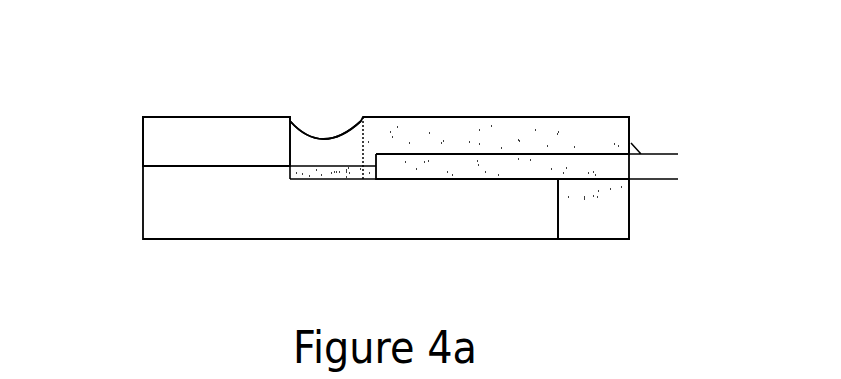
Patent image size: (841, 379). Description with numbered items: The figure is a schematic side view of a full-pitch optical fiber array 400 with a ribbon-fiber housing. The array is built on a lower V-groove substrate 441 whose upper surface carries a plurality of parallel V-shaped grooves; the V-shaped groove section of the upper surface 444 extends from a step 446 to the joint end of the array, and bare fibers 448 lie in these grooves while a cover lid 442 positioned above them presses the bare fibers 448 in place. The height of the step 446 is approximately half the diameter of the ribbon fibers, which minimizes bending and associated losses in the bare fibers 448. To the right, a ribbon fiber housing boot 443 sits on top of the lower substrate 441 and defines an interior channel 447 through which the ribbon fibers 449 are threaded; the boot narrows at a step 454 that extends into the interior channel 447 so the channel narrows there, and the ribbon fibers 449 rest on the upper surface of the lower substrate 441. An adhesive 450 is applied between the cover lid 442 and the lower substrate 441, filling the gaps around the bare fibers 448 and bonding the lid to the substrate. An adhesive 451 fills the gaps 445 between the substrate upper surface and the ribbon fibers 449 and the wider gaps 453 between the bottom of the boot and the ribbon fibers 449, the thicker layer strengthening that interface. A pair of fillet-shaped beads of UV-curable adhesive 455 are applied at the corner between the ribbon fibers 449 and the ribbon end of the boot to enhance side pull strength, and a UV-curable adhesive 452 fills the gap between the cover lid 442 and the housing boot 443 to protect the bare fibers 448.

The optical fiber array 400 is at (106, 229).
The lower V-groove substrate 441 is at (218, 203).
The cover lid 442 is at (192, 130).
The ribbon fiber housing boot 443 is at (522, 131).
The V-shaped groove section of the upper surface 444 is at (241, 166).
The gaps 445 is at (402, 180).
The step 446 is at (292, 181).
The interior channel 447 is at (605, 143).
The bare fibers 448 is at (340, 163).
The ribbon fibers 449 is at (678, 167).
The adhesive 450 is at (130, 165).
The adhesive 451 is at (449, 168).
The UV-curable adhesive 452 is at (315, 142).
The gaps 453 is at (593, 191).
The step 454 is at (558, 252).
The fillet-shaped beads of UV-curable adhesive 455 is at (630, 192).